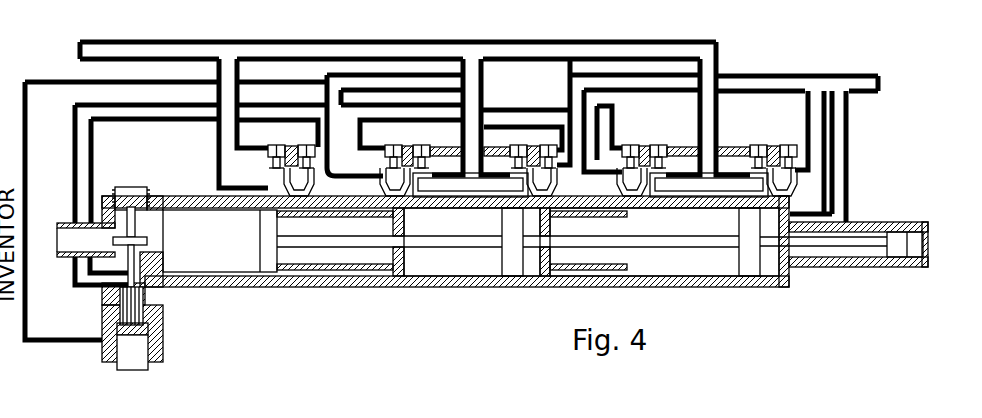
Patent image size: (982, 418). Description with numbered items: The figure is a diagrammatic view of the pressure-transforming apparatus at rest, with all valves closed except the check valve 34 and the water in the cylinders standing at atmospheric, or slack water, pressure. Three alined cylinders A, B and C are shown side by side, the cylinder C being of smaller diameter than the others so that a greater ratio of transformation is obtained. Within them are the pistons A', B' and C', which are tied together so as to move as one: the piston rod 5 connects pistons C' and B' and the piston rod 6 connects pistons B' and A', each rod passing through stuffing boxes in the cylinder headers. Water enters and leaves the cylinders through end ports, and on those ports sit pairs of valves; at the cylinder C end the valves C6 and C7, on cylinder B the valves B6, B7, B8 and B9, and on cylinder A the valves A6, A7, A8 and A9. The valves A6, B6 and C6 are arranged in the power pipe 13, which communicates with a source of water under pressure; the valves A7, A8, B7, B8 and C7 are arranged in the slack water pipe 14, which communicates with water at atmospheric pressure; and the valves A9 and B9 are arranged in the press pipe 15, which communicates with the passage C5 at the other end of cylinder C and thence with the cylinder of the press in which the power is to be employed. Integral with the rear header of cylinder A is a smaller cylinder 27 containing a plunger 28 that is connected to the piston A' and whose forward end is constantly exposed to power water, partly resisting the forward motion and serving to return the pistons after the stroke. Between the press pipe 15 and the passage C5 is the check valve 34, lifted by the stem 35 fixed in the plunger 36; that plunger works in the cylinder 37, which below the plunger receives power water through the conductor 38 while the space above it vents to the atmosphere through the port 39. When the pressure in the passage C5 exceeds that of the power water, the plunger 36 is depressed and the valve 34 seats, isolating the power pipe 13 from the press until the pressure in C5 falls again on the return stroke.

The piston rod 5 is at (389, 241).
The piston rod 6 is at (631, 245).
The power pipe 13 is at (860, 76).
The slack water pipe 14 is at (270, 40).
The press pipe 15 is at (105, 119).
The cylinder 27 is at (878, 224).
The plunger 28 is at (907, 246).
The check valve 34 is at (113, 241).
The stem 35 is at (150, 290).
The plunger 36 is at (165, 340).
The cylinder 37 is at (102, 322).
The conductor 38 is at (70, 343).
The port 39 is at (145, 318).
The cylinder A is at (664, 242).
The cylinder B is at (472, 242).
The cylinder C is at (220, 241).
The piston A' is at (749, 242).
The piston B' is at (512, 242).
The piston C' is at (268, 241).
The passage C5 is at (74, 240).
The valve C6 is at (307, 145).
The valve C7 is at (277, 145).
The valve B6 is at (549, 145).
The valve B7 is at (519, 145).
The valve B8 is at (422, 145).
The valve B9 is at (394, 145).
The valve A6 is at (789, 145).
The valve A7 is at (759, 145).
The valve A8 is at (659, 145).
The valve A9 is at (631, 145).